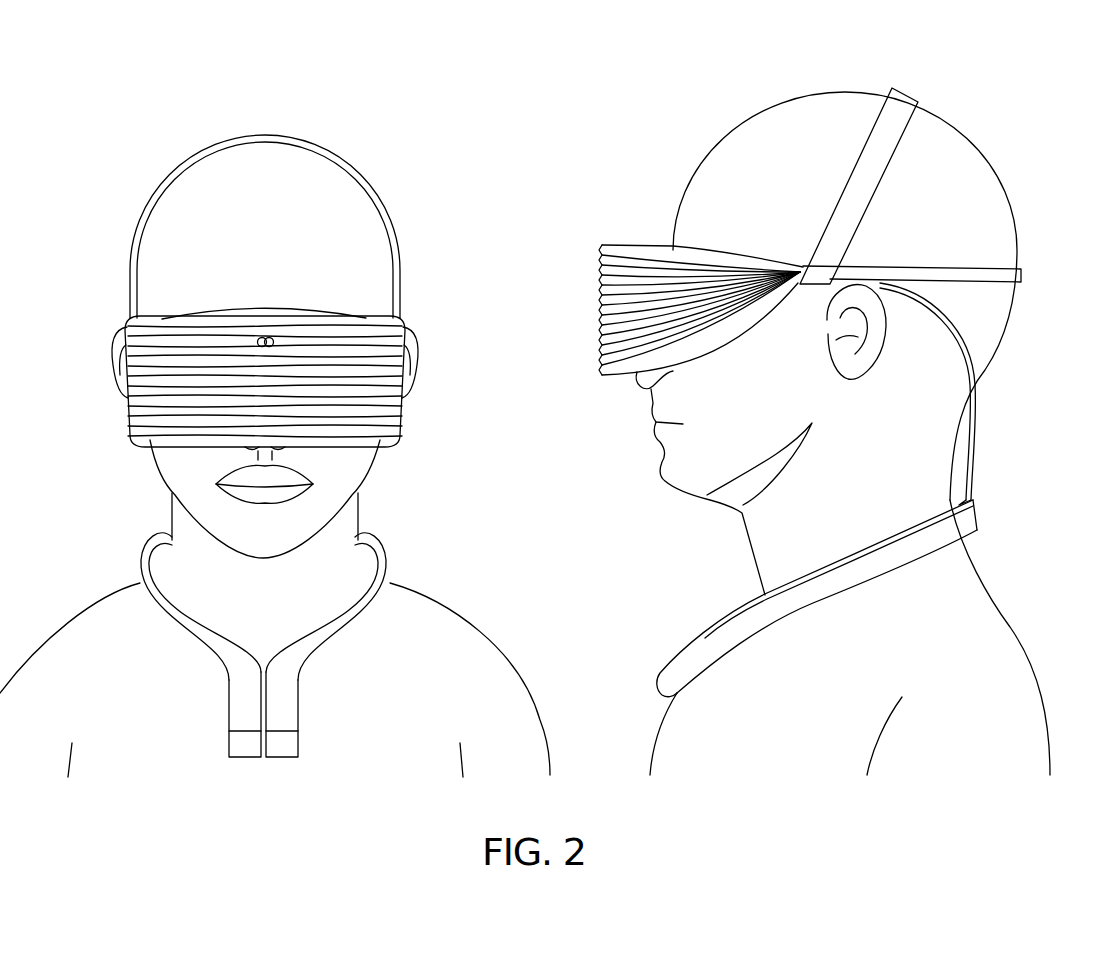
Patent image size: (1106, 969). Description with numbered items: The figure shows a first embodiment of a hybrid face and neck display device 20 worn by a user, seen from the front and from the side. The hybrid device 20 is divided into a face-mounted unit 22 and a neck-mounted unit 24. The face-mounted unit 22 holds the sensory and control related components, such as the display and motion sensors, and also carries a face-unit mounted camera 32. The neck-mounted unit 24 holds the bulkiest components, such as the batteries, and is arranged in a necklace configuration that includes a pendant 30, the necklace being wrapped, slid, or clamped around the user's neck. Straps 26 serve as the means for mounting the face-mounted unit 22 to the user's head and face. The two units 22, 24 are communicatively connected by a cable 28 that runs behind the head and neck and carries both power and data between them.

The hybrid face and neck display device 20 is at (394, 140).
The face-mounted unit 22 is at (122, 330).
The neck-mounted unit 24 is at (168, 622).
The straps 26 is at (907, 92).
The cable 28 is at (976, 435).
The pendant 30 is at (228, 703).
The face-unit mounted camera 32 is at (268, 338).